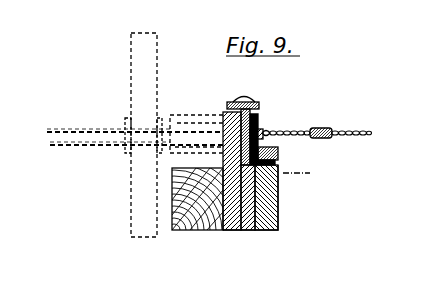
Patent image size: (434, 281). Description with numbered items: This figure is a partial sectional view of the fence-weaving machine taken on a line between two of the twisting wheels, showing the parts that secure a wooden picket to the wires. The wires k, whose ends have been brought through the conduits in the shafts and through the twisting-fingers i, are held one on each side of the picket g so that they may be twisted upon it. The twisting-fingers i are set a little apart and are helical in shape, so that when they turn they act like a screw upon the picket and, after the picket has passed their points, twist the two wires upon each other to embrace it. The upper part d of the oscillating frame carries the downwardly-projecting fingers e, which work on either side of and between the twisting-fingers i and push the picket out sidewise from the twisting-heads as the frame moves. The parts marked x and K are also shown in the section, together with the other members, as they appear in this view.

The wire k is at (130, 142).
The upper part of the oscillating frame d is at (196, 124).
The block x is at (283, 198).
The downwardly-projecting fingers e is at (259, 106).
The twisting-fingers i is at (279, 145).
The picket g is at (273, 135).
The chain K is at (321, 122).